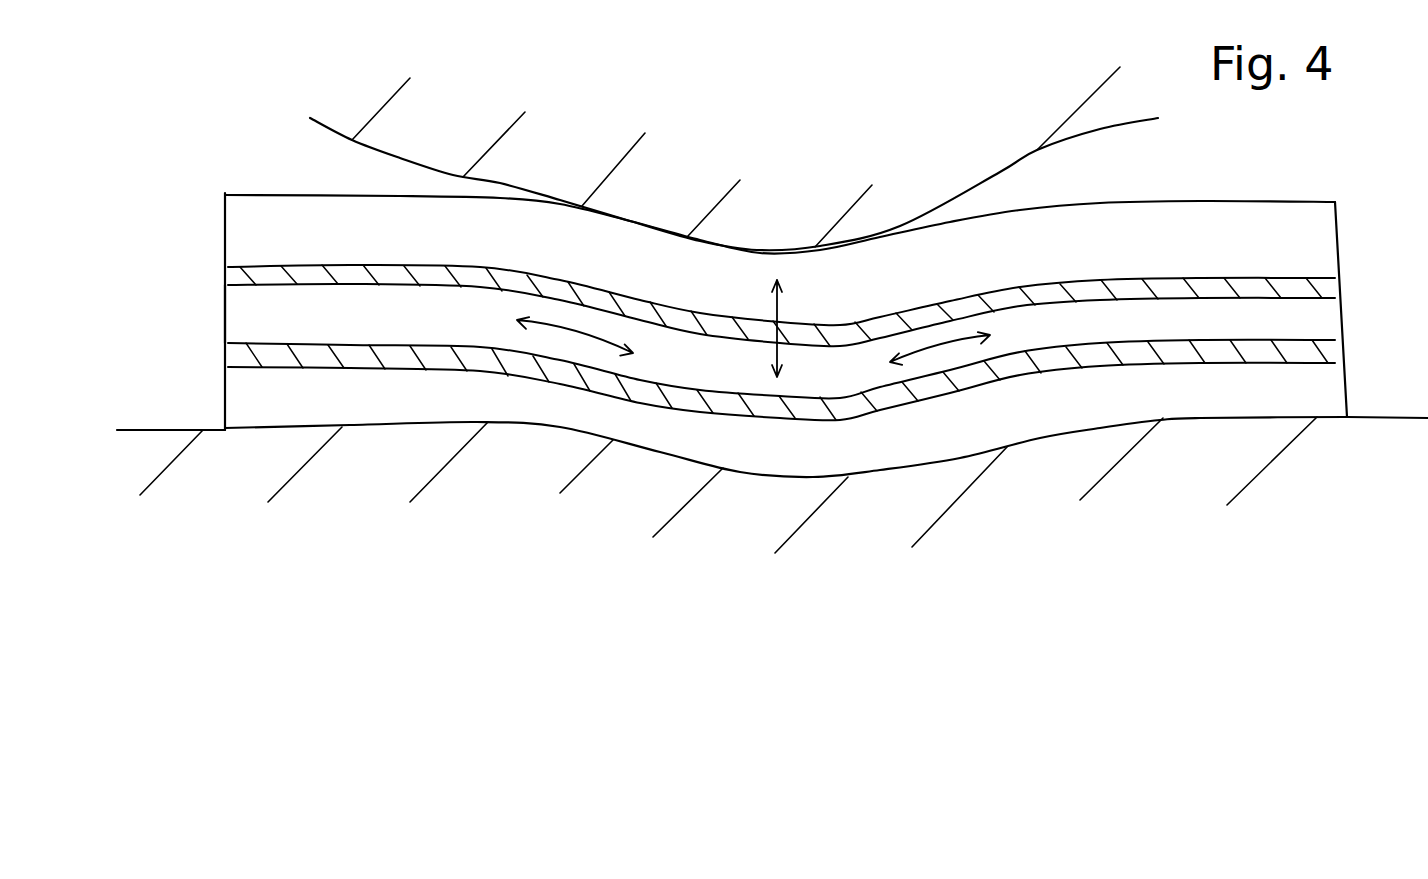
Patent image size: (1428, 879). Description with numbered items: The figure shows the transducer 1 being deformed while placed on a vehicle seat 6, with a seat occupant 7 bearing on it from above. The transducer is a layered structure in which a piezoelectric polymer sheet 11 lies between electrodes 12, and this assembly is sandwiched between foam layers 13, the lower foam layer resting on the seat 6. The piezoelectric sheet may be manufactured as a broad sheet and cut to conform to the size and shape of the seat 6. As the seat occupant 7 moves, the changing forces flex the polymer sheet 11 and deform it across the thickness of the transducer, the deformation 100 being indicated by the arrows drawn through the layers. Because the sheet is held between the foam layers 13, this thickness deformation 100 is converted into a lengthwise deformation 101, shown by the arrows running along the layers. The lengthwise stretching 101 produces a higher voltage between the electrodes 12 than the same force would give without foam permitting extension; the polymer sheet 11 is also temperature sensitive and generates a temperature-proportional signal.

The transducer 1 is at (279, 166).
The vehicle seat 6 is at (198, 427).
The seat occupant 7 is at (1080, 140).
The piezoelectric polymer sheet 11 is at (227, 318).
The electrodes 12 is at (223, 270).
The foam layers 13 is at (1337, 230).
The deformation across the thickness 100 is at (772, 305).
The lengthwise deformation 101 is at (562, 327).